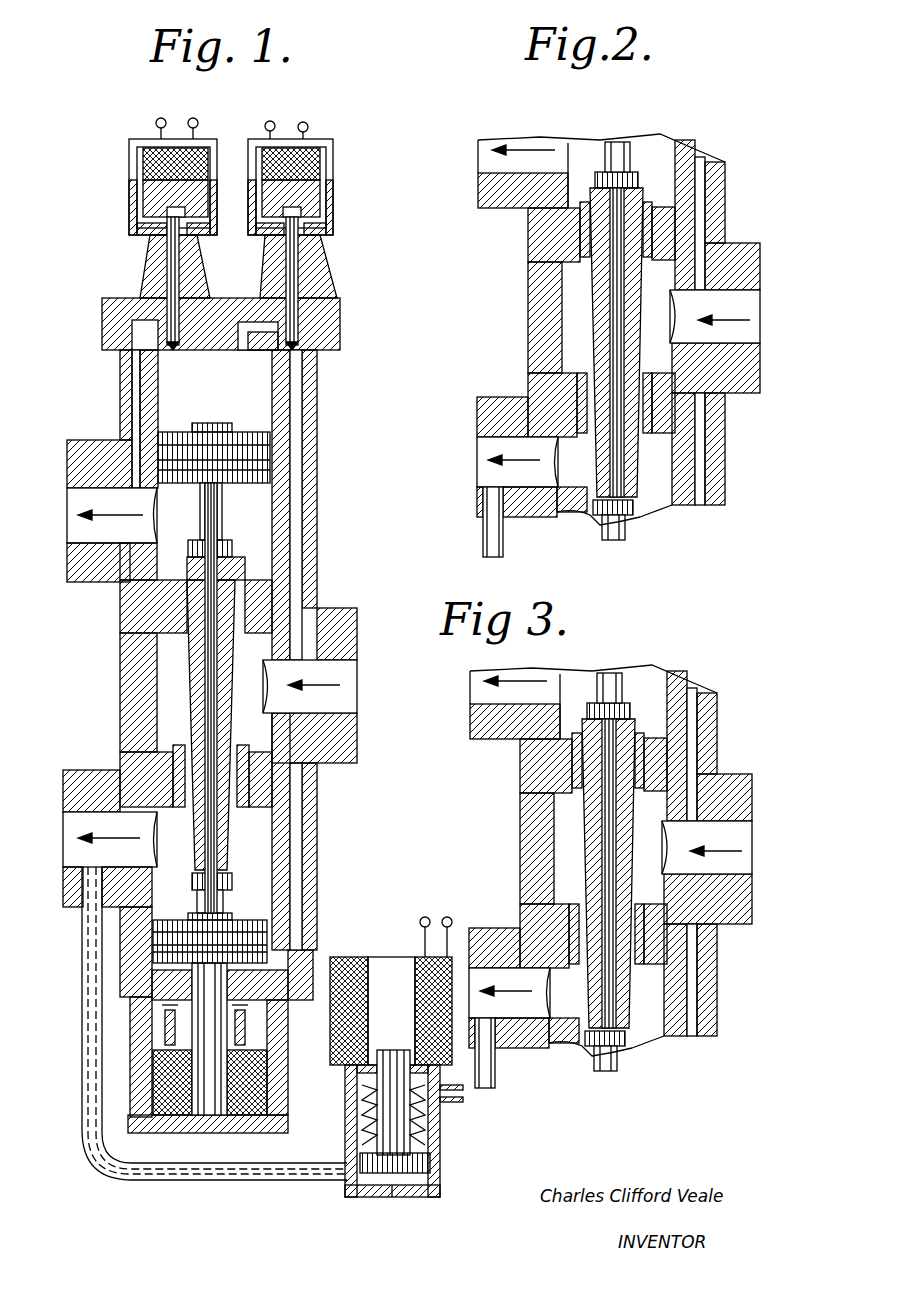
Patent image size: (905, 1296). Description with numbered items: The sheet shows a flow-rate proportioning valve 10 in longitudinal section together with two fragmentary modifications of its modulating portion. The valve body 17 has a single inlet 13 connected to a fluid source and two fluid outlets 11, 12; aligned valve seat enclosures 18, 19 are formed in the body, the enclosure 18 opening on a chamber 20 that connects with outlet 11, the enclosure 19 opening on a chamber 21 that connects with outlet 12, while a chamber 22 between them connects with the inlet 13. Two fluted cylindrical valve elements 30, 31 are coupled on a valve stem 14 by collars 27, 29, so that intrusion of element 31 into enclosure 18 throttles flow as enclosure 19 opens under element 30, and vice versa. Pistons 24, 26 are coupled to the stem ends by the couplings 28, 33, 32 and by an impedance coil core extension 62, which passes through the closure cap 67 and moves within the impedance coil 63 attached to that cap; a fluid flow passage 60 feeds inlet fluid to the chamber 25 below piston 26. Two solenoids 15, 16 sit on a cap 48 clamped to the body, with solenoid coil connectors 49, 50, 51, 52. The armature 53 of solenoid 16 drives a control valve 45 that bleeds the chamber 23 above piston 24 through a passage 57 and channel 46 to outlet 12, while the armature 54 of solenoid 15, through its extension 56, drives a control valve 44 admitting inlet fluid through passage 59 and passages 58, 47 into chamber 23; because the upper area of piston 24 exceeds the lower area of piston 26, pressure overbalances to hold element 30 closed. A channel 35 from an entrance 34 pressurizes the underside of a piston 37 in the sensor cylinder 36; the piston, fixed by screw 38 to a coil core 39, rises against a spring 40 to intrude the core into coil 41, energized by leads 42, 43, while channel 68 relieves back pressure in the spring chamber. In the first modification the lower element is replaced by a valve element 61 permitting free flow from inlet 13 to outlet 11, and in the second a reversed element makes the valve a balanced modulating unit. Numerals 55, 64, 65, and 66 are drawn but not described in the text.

In FIG. 1, the valve 10 is at (320, 420).
In FIG. 1, the fluid outlet 11 is at (78, 826).
In FIG. 2, the fluid outlet 11 is at (487, 470).
In FIG. 1, the fluid outlet 12 is at (76, 530).
In FIG. 2, the fluid outlet 12 is at (488, 162).
In FIG. 3, the fluid outlet 12 is at (478, 692).
In FIG. 1, the inlet 13 is at (340, 672).
In FIG. 2, the inlet 13 is at (748, 310).
In FIG. 3, the inlet 13 is at (745, 832).
In FIG. 1, the valve stem 14 is at (216, 672).
In FIG. 2, the valve stem 14 is at (615, 306).
In FIG. 3, the valve stem 14 is at (620, 830).
In FIG. 1, the solenoid 15 is at (335, 206).
In FIG. 1, the solenoid 16 is at (131, 155).
In FIG. 1, the valve body 17 is at (310, 470).
In FIG. 2, the valve body 17 is at (745, 248).
In FIG. 3, the valve body 17 is at (720, 702).
In FIG. 1, the valve seat enclosure 18 is at (252, 790).
In FIG. 2, the valve seat enclosure 18 is at (660, 428).
In FIG. 3, the valve seat enclosure 18 is at (660, 960).
In FIG. 1, the valve seat enclosure 19 is at (236, 600).
In FIG. 2, the valve seat enclosure 19 is at (660, 200).
In FIG. 3, the valve seat enclosure 19 is at (650, 738).
In FIG. 1, the chamber 20 is at (250, 865).
In FIG. 2, the chamber 20 is at (665, 512).
In FIG. 3, the chamber 20 is at (660, 1040).
In FIG. 1, the chamber 21 is at (258, 530).
In FIG. 2, the chamber 21 is at (665, 158).
In FIG. 3, the chamber 21 is at (660, 686).
In FIG. 1, the chamber 22 is at (245, 745).
In FIG. 2, the chamber 22 is at (572, 338).
In FIG. 3, the chamber 22 is at (560, 829).
In FIG. 1, the chamber 23 is at (262, 400).
In FIG. 1, the piston 24 is at (175, 432).
In FIG. 1, the chamber 25 is at (280, 965).
In FIG. 1, the piston 26 is at (226, 928).
In FIG. 1, the collar 27 is at (192, 880).
In FIG. 2, the collar 27 is at (625, 513).
In FIG. 3, the collar 27 is at (625, 1040).
In FIG. 1, the coupling means 28 is at (218, 514).
In FIG. 2, the coupling means 28 is at (628, 152).
In FIG. 3, the coupling means 28 is at (620, 676).
In FIG. 1, the collar 29 is at (195, 540).
In FIG. 2, the collar 29 is at (604, 185).
In FIG. 3, the collar 29 is at (597, 718).
In FIG. 1, the valve element 30 is at (238, 561).
In FIG. 2, the valve element 30 is at (643, 198).
In FIG. 3, the valve element 30 is at (635, 729).
In FIG. 1, the valve element 31 is at (228, 842).
In FIG. 1, the coupling means 32 is at (80, 935).
In FIG. 1, the coupling means 33 is at (194, 378).
In FIG. 1, the entrance 34 is at (95, 868).
In FIG. 1, the channel 35 is at (80, 1062).
In FIG. 2, the channel 35 is at (500, 540).
In FIG. 3, the channel 35 is at (500, 1075).
In FIG. 1, the sensor cylinder 36 is at (440, 1145).
In FIG. 1, the piston 37 is at (440, 1168).
In FIG. 1, the screw 38 is at (392, 1197).
In FIG. 1, the coil core 39 is at (432, 1116).
In FIG. 1, the spring 40 is at (357, 1110).
In FIG. 1, the coil 41 is at (338, 957).
In FIG. 1, the lead 42 is at (422, 918).
In FIG. 1, the lead 43 is at (452, 919).
In FIG. 1, the control valve 44 is at (342, 340).
In FIG. 1, the control valve 45 is at (130, 370).
In FIG. 1, the channel 46 is at (135, 395).
In FIG. 1, the passage 47 is at (250, 322).
In FIG. 1, the cap 48 is at (330, 290).
In FIG. 1, the lead 49 is at (158, 118).
In FIG. 1, the lead 50 is at (196, 118).
In FIG. 1, the lead 51 is at (270, 121).
In FIG. 1, the lead 52 is at (306, 123).
In FIG. 1, the armature 53 is at (150, 205).
In FIG. 1, the armature 54 is at (330, 222).
In FIG. 1, the pilot valve stem 55 is at (165, 320).
In FIG. 1, the extension 56 is at (300, 292).
In FIG. 1, the passage 57 is at (229, 378).
In FIG. 1, the passage 58 is at (325, 323).
In FIG. 1, the passage 59 is at (305, 608).
In FIG. 2, the passage 59 is at (700, 228).
In FIG. 3, the passage 59 is at (695, 760).
In FIG. 1, the fluid flow passage 60 is at (300, 790).
In FIG. 2, the fluid flow passage 60 is at (700, 427).
In FIG. 3, the fluid flow passage 60 is at (690, 950).
In FIG. 2, the valve element 61 is at (640, 497).
In FIG. 1, the impedance coil core extension 62 is at (205, 1115).
In FIG. 1, the impedance coil 63 is at (255, 1120).
In FIG. 1, the bottom plate 64 is at (270, 1133).
In FIG. 1, the contact 65 is at (250, 1040).
In FIG. 1, the contact 66 is at (245, 1020).
In FIG. 1, the closure cap 67 is at (135, 1050).
In FIG. 1, the channel 68 is at (463, 1095).